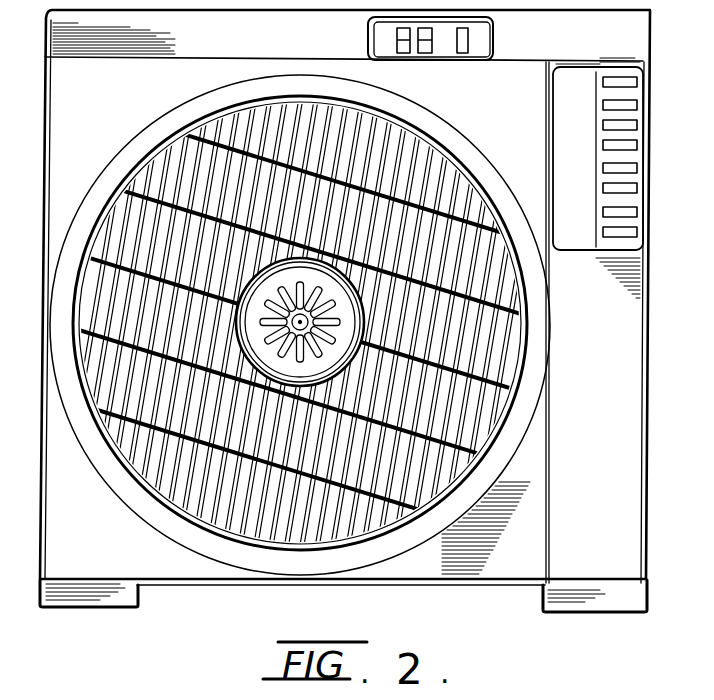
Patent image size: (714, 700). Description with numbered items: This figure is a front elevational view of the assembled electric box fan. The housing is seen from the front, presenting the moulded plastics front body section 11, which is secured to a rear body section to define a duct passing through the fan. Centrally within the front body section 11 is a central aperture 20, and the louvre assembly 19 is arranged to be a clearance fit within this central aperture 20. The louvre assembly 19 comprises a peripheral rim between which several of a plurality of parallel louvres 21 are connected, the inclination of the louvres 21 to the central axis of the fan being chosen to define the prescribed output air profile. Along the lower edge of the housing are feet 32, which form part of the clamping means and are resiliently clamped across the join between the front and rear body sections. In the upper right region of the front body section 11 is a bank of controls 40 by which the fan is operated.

The front body section 11 is at (623, 513).
The louvre assembly 19 is at (514, 346).
The central aperture 20 is at (230, 530).
The louvres 21 is at (462, 417).
The feet 32 is at (108, 607).
The bank of controls 40 is at (655, 98).